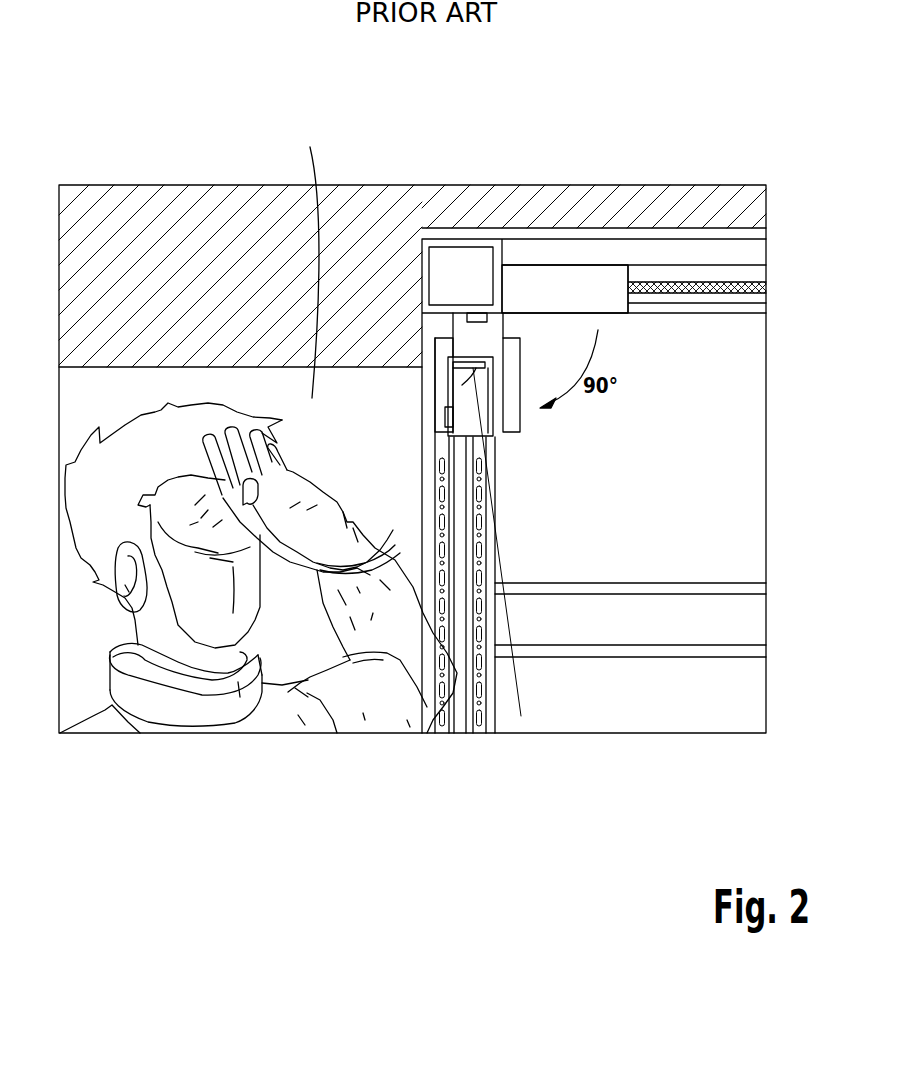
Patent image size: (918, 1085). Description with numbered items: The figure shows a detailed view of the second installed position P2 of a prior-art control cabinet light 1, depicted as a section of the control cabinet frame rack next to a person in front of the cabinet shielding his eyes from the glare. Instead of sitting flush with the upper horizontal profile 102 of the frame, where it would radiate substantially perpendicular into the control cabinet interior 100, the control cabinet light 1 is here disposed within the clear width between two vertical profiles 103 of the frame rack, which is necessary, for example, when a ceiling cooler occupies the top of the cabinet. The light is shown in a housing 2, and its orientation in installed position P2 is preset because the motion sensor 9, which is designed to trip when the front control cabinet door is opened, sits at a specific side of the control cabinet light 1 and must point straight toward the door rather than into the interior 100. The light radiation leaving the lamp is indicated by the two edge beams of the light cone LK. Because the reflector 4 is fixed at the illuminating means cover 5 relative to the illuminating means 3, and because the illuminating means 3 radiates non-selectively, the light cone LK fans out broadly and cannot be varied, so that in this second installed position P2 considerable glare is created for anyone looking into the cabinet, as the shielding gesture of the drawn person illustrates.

The control cabinet light 1 is at (478, 324).
The housing 2 is at (432, 330).
The illuminating means 3 is at (462, 385).
The reflector 4 is at (493, 365).
The illuminating means cover 5 is at (453, 437).
The motion sensor 9 is at (445, 413).
The control cabinet interior 100 is at (735, 448).
The horizontal profile 102 is at (682, 258).
The vertical profiles 103 is at (472, 734).
The light cone LK is at (314, 259).
The second installed position P2 is at (240, 276).